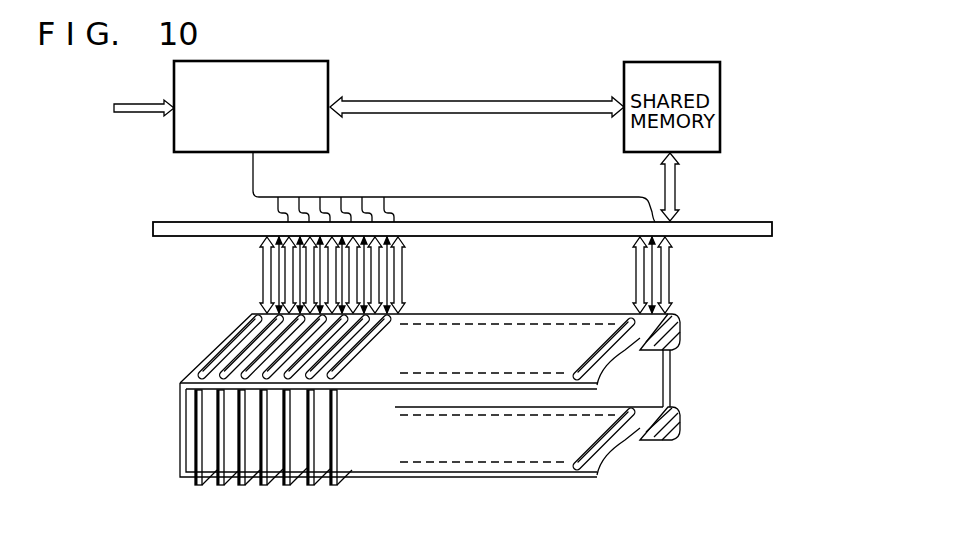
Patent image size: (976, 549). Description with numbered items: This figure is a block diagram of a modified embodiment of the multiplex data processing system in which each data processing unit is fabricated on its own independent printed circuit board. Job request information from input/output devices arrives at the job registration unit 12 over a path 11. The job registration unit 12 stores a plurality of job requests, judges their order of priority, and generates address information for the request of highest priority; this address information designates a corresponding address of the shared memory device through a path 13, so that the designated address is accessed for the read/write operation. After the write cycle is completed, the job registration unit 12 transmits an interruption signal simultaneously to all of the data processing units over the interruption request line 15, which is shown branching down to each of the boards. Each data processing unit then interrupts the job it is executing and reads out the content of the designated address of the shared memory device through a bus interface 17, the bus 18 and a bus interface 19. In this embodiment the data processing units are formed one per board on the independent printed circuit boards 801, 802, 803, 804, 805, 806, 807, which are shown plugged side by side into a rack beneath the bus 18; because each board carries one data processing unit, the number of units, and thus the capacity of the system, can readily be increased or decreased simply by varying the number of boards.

The path 11 is at (128, 104).
The job registration unit 12 is at (329, 84).
The path 13 is at (492, 100).
The interruption request line 15 is at (253, 178).
The bus interface 17 is at (677, 178).
The bus 18 is at (540, 237).
The bus interface 19 is at (263, 288).
The printed circuit board 801 is at (197, 487).
The printed circuit board 802 is at (219, 487).
The printed circuit board 803 is at (244, 487).
The printed circuit board 804 is at (265, 487).
The printed circuit board 805 is at (291, 487).
The printed circuit board 806 is at (312, 487).
The printed circuit board 807 is at (337, 487).